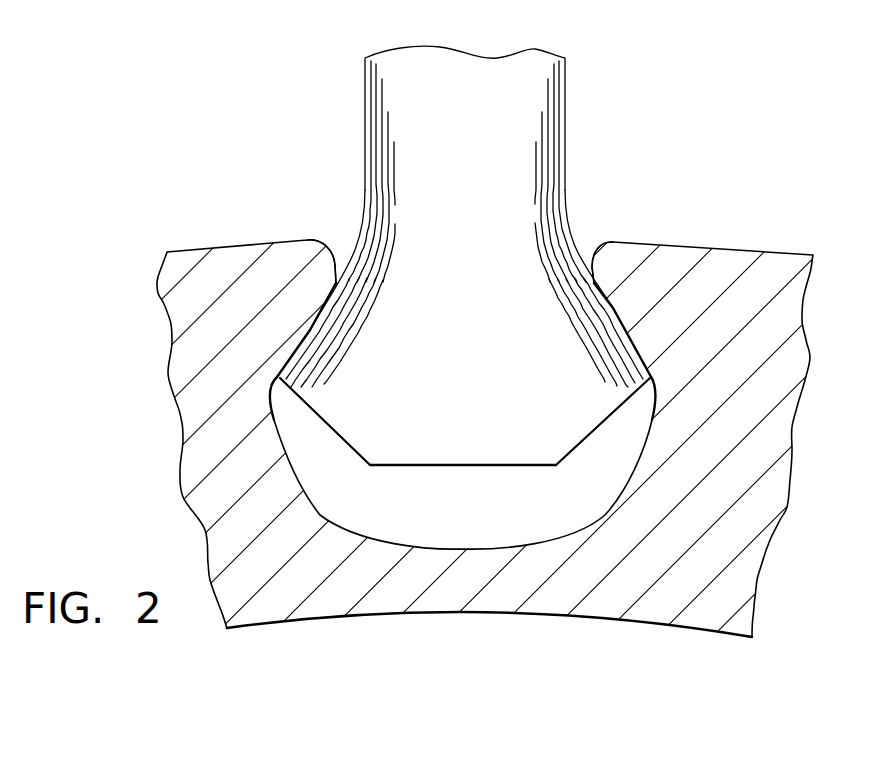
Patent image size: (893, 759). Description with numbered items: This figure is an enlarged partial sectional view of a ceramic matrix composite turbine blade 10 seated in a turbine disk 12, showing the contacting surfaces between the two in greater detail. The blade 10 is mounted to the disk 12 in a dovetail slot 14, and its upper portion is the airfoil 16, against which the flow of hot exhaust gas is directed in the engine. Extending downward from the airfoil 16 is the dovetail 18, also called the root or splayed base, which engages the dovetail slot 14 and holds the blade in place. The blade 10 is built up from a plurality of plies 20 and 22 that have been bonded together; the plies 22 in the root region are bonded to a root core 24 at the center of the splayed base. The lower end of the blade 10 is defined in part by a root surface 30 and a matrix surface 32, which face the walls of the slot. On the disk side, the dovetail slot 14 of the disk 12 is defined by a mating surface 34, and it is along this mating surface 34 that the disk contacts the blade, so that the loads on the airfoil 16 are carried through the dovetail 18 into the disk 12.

The turbine blade 10 is at (676, 60).
The turbine disk 12 is at (723, 401).
The dovetail slot 14 is at (635, 460).
The airfoil 16 is at (475, 116).
The dovetail 18 is at (466, 447).
The plies 20 is at (553, 107).
The plies 22 is at (320, 325).
The root core 24 is at (473, 374).
The root surface 30 is at (303, 395).
The matrix surface 32 is at (290, 358).
The mating surface 34 is at (327, 281).